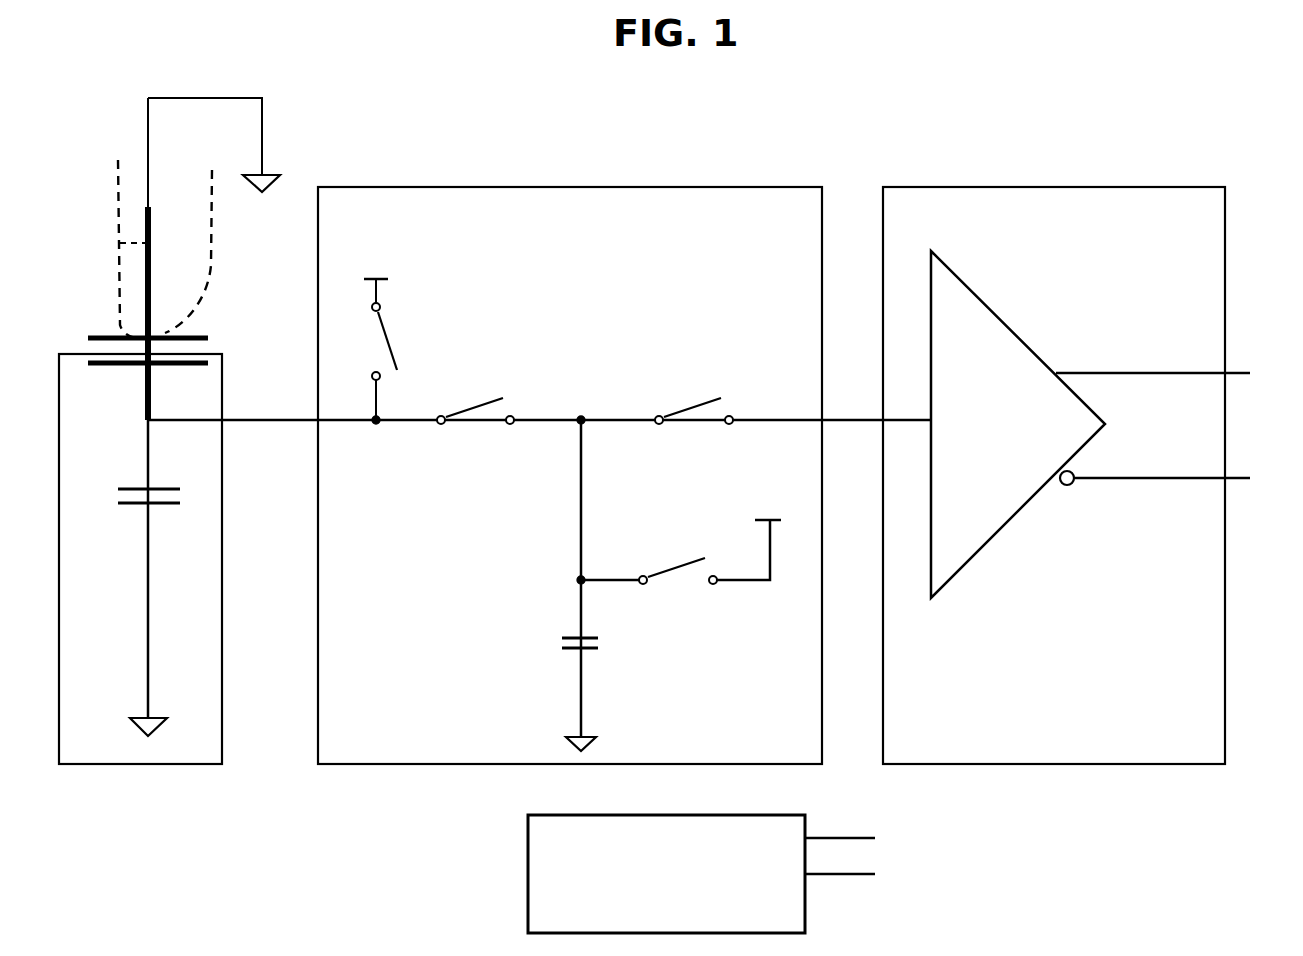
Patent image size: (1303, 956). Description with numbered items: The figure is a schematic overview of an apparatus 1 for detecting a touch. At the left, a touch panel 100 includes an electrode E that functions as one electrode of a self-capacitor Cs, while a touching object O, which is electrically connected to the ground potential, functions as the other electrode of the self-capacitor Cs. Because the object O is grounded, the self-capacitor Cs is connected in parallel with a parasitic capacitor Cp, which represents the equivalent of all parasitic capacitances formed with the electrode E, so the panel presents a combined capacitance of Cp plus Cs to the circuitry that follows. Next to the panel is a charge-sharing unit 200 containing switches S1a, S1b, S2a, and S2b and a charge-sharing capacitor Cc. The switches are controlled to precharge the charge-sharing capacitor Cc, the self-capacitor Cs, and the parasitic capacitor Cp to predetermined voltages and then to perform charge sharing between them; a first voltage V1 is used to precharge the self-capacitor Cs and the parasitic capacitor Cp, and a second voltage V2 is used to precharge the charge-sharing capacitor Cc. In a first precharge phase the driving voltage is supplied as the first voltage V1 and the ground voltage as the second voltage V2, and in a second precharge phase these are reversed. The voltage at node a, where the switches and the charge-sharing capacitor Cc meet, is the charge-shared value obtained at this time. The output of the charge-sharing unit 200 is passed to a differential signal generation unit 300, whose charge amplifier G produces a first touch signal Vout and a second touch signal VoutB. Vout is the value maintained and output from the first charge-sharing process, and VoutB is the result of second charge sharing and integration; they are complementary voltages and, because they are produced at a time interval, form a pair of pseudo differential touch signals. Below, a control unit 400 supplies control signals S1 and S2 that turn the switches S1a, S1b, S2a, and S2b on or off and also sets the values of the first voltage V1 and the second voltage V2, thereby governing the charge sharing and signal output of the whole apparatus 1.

The apparatus for detecting a touch 1 is at (1278, 120).
The touch panel 100 is at (140, 764).
The charge-sharing unit 200 is at (362, 766).
The differential signal generation unit 300 is at (1110, 766).
The control unit 400 is at (718, 874).
The object O is at (117, 207).
The electrode E is at (102, 368).
The self-capacitor Cs is at (134, 313).
The parasitic capacitor Cp is at (127, 496).
The charge-sharing capacitor Cc is at (598, 647).
The switch S1a is at (367, 335).
The switch S1b is at (680, 536).
The switch S2a is at (475, 430).
The switch S2b is at (694, 430).
The first voltage V1 is at (377, 260).
The second voltage V2 is at (767, 502).
The node a is at (582, 412).
The charge amplifier G is at (1018, 424).
The first touch signal Vout is at (1153, 357).
The second touch signal VoutB is at (1155, 463).
The control signal S1 is at (857, 840).
The control signal S2 is at (857, 876).